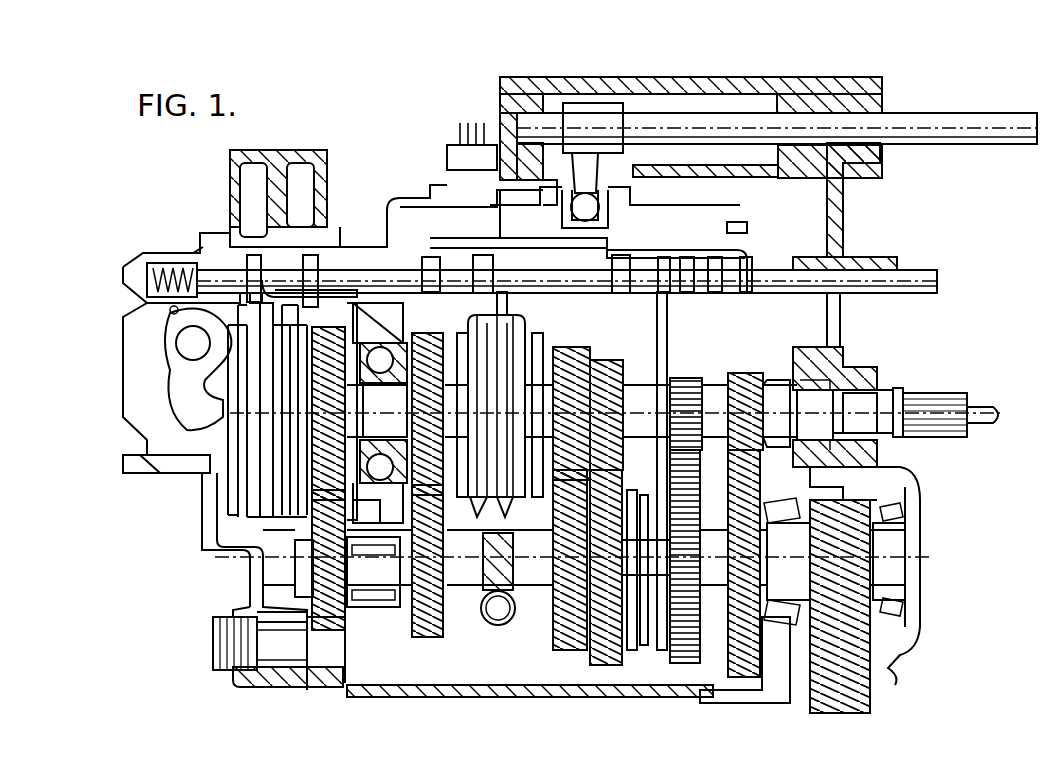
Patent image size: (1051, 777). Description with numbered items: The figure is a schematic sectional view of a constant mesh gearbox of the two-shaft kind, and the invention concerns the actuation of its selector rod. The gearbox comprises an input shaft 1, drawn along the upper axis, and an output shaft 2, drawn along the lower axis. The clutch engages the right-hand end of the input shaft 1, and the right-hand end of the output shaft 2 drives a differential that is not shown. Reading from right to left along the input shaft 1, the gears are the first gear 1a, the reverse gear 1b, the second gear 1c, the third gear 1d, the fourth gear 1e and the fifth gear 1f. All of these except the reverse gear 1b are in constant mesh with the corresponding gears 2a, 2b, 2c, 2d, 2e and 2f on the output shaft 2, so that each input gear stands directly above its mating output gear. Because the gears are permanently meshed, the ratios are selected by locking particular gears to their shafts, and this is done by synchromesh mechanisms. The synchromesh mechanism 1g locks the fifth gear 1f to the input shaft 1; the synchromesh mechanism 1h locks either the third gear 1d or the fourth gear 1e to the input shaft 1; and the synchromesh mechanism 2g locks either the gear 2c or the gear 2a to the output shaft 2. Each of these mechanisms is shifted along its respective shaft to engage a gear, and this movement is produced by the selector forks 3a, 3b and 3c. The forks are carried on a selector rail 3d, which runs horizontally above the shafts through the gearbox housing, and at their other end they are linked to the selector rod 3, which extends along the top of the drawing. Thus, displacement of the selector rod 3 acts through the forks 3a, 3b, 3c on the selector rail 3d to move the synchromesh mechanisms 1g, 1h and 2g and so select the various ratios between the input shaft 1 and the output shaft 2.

The input shaft 1 is at (948, 397).
The first gear 1a is at (750, 370).
The reverse gear 1b is at (690, 378).
The second gear 1c is at (625, 358).
The third gear 1d is at (567, 343).
The fourth gear 1e is at (440, 333).
The fifth gear 1f is at (320, 330).
The synchromesh mechanism 1g is at (230, 478).
The synchromesh mechanism 1h is at (468, 500).
The output shaft 2 is at (900, 553).
The output shaft gear 2a is at (750, 673).
The output shaft gear 2b is at (678, 667).
The output shaft gear 2c is at (600, 662).
The output shaft gear 2d is at (563, 645).
The output shaft gear 2e is at (420, 637).
The output shaft gear 2f is at (312, 596).
The synchromesh mechanism 2g is at (650, 643).
The selector rod 3 is at (1003, 120).
The selector fork 3a is at (165, 312).
The selector fork 3b is at (485, 290).
The selector fork 3c is at (663, 587).
The selector rail 3d is at (928, 270).